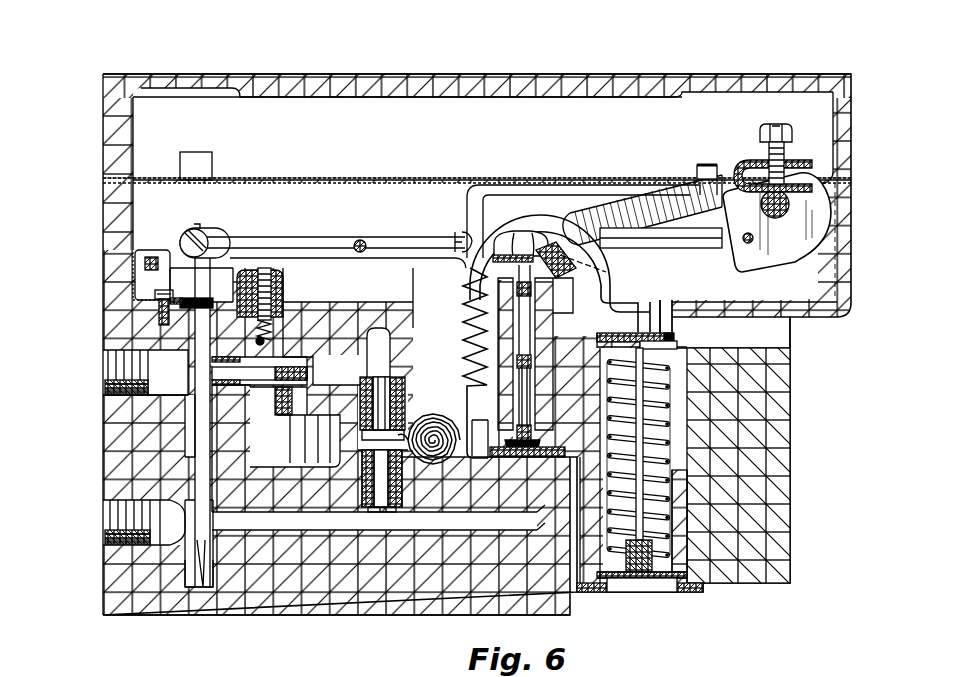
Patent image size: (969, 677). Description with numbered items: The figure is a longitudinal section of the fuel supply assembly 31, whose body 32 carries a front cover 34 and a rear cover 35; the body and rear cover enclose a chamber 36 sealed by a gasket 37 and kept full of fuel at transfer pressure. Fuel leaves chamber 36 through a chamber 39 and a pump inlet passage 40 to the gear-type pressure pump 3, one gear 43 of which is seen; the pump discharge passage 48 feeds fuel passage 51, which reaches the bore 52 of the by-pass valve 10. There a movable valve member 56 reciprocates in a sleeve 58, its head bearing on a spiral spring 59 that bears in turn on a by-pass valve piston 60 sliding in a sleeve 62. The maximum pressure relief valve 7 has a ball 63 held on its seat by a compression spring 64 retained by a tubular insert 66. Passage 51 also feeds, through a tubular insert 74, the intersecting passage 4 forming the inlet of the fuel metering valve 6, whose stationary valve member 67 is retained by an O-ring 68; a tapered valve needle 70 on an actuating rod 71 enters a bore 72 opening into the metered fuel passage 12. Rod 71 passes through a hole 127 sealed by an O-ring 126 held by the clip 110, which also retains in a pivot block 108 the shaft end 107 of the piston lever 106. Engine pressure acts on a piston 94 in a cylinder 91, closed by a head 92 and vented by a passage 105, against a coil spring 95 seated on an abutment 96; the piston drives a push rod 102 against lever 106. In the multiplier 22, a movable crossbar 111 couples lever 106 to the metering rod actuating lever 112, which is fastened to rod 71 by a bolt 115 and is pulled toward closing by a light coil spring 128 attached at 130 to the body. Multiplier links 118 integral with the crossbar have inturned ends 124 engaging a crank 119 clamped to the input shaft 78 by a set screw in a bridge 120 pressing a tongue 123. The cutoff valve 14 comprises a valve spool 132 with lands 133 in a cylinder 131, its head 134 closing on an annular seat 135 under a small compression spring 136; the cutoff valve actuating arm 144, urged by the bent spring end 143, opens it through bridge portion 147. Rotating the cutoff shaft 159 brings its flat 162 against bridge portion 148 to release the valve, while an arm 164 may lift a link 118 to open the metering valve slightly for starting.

The fuel supply assembly 31 is at (100, 110).
The rear cover 35 is at (110, 128).
The gasket 37 is at (103, 180).
The body 32 is at (110, 233).
The front cover 34 is at (113, 580).
The chamber 36 is at (392, 192).
The shaft end 107 is at (140, 272).
The pivot block 108 is at (145, 286).
The clip 110 is at (158, 305).
The bolt 115 is at (192, 228).
The metering rod actuating lever 112 is at (258, 237).
The tubular insert 66 is at (267, 296).
The crossbar 111 is at (360, 240).
The multiplier 22 is at (432, 230).
The cutoff valve actuating arm 144 is at (632, 192).
The bent-over outer end of spiral spring 143 is at (700, 164).
The bridge 120 is at (800, 162).
The tongue 123 is at (812, 186).
The input shaft 78 is at (788, 210).
The crank 119 is at (810, 240).
The bridge portion 147 is at (522, 238).
The flat 162 is at (542, 238).
The bridge portion 148 is at (628, 208).
The arm 164 is at (604, 276).
The multiplier links 118 is at (668, 249).
The inturned ends 124 is at (750, 245).
The hole 127 is at (205, 304).
The compression spring 64 is at (283, 302).
The maximum pressure relief valve 7 is at (310, 283).
The bore 52 is at (384, 334).
The light coil spring 128 is at (470, 262).
The chamber 39 is at (448, 332).
The cutoff shaft 159 is at (560, 272).
The piston lever 106 is at (608, 294).
The abutment 96 is at (674, 338).
The coil spring 95 is at (680, 347).
The passage 105 is at (775, 334).
The O-ring 126 is at (188, 353).
The actuating rod 71 is at (196, 378).
The ball 63 is at (256, 342).
The fuel passage 51 is at (310, 360).
The sleeve 58 is at (366, 382).
The movable valve member 56 is at (396, 397).
The valve spool 132 is at (534, 328).
The lands 133 is at (532, 357).
The cutoff valve 14 is at (536, 386).
The cylinder 131 is at (532, 404).
The annular seat 135 is at (532, 434).
The cylinder 91 is at (700, 408).
The push rod 102 is at (683, 442).
The intersecting passage 4 is at (186, 420).
The tubular insert 74 is at (238, 385).
The pump discharge passage 48 is at (276, 410).
The gear 43 is at (282, 433).
The stationary valve member 67 is at (178, 445).
The pressure pump 3 is at (302, 478).
The pump inlet passage 40 is at (356, 478).
The spiral spring 59 is at (458, 468).
The spring attachment point 130 is at (488, 462).
The head 134 is at (544, 462).
The O-ring 68 is at (178, 478).
The sleeve 62 is at (370, 508).
The by-pass valve piston 60 is at (384, 508).
The small compression spring 136 is at (516, 502).
The metered fuel passage 12 is at (298, 520).
The by-pass valve 10 is at (380, 512).
The valve needle 70 is at (190, 565).
The fuel metering valve 6 is at (195, 600).
The bore 72 is at (207, 592).
The head 92 is at (640, 592).
The piston 94 is at (665, 584).